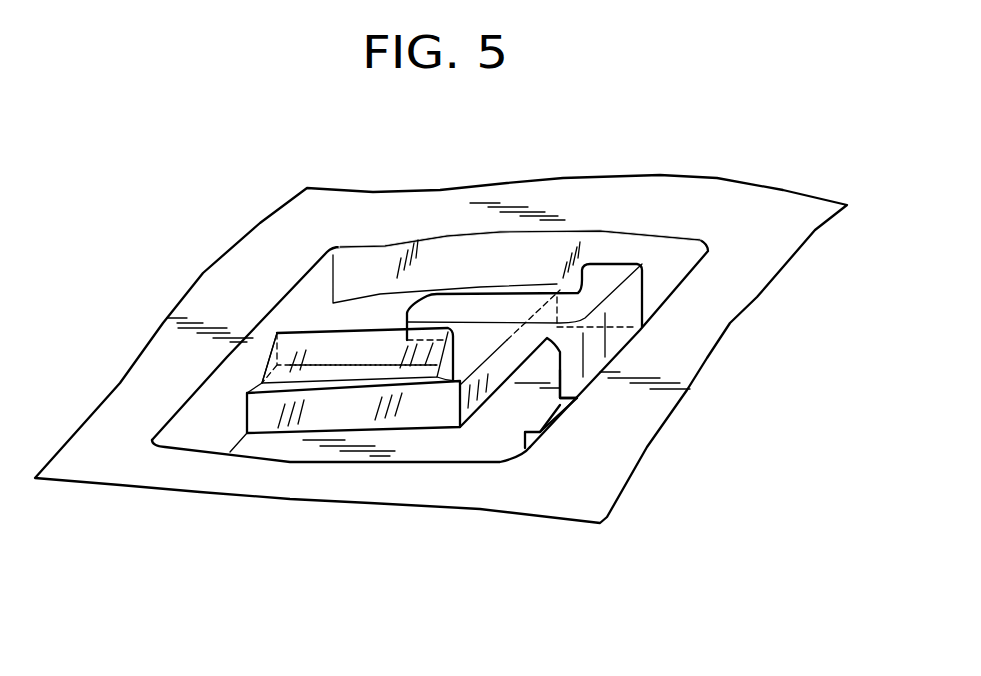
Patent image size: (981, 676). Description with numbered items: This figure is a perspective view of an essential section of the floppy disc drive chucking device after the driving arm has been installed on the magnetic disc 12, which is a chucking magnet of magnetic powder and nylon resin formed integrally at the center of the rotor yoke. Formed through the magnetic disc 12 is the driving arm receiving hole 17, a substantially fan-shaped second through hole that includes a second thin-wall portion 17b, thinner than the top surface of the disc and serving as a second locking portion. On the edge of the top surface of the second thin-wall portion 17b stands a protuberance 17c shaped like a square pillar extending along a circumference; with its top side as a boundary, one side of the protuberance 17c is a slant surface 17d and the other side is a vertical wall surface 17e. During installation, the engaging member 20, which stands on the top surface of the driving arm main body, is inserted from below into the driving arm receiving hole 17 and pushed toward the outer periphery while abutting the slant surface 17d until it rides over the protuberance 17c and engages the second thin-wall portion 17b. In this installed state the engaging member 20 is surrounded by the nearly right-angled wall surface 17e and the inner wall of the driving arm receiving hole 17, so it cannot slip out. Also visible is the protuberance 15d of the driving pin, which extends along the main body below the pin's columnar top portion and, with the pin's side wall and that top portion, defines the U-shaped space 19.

The magnetic disc 12 is at (102, 430).
The driving arm receiving hole 17 is at (497, 275).
The second thin-wall portion 17b is at (453, 380).
The protuberance 17c is at (330, 320).
The slant surface 17d is at (295, 343).
The vertical wall surface 17e is at (360, 340).
The U-shaped space 19 is at (520, 403).
The engaging member 20 is at (517, 310).
The protuberance 15d is at (550, 417).